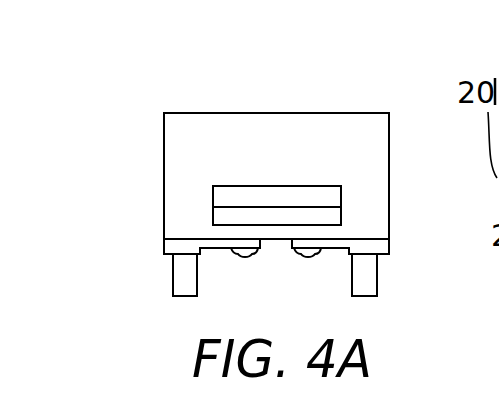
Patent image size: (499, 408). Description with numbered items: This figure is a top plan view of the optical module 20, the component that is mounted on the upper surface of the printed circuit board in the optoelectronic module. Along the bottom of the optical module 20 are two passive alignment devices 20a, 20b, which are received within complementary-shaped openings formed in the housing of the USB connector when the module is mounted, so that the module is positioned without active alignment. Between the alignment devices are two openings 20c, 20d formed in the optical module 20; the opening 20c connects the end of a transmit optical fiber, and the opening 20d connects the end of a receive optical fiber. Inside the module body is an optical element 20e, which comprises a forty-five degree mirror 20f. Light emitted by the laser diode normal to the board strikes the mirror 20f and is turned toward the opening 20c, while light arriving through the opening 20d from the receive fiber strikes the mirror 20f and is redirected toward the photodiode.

The optical module 20 is at (300, 85).
The passive alignment device 20a is at (375, 298).
The passive alignment device 20b is at (178, 298).
The opening 20c is at (250, 257).
The opening 20d is at (308, 258).
The optical element 20e is at (227, 190).
The 45° mirror 20f is at (271, 212).